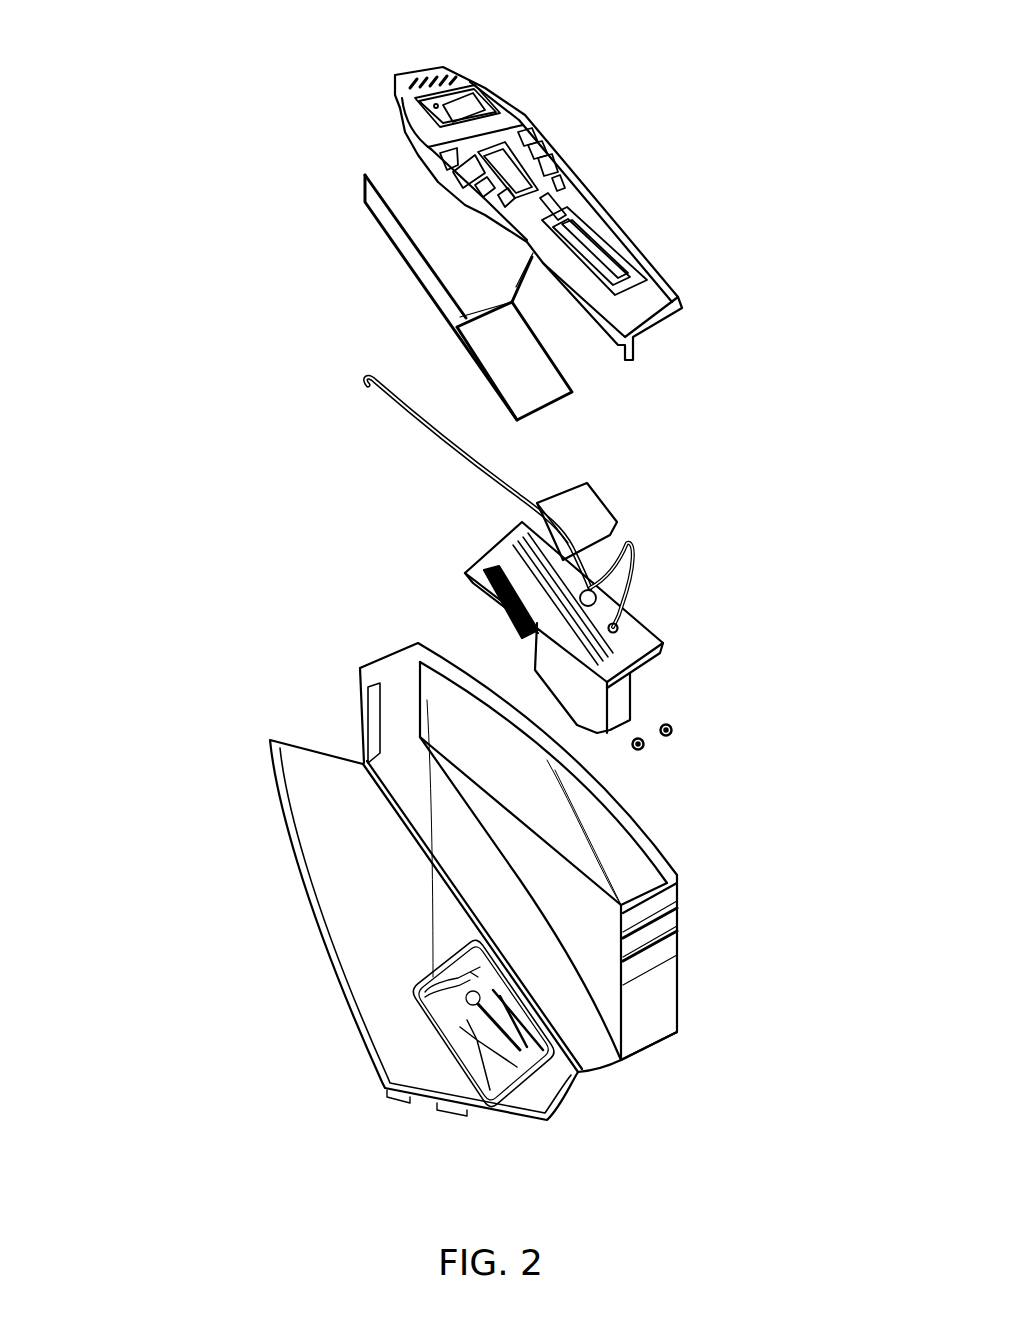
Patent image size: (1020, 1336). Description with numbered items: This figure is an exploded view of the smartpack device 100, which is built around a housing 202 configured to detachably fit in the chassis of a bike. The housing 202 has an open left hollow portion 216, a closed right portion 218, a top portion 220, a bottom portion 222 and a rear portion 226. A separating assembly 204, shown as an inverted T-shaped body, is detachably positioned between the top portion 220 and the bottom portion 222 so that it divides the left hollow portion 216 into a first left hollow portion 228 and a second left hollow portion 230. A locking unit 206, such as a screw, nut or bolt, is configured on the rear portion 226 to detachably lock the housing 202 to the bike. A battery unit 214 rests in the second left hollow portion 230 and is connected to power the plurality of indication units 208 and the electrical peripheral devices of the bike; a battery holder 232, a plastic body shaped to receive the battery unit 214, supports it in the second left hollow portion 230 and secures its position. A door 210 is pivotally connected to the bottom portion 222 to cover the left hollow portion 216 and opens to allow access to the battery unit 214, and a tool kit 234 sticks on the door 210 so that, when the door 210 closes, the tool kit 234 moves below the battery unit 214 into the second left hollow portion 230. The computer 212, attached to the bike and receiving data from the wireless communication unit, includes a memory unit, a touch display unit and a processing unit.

The smartpack device 100 is at (198, 34).
The housing 202 is at (256, 828).
The separating assembly 204 is at (517, 285).
The locking unit 206 is at (646, 749).
The plurality of indication units 208 is at (379, 75).
The door 210 is at (380, 905).
The computer 212 is at (470, 100).
The battery unit 214 is at (613, 657).
The open left hollow portion 216 is at (431, 204).
The closed right portion 218 is at (593, 848).
The top portion 220 is at (553, 207).
The bottom portion 222 is at (585, 1042).
The rear portion 226 is at (658, 1015).
The first left hollow portion 228 is at (517, 285).
The second left hollow portion 230 is at (532, 368).
The battery holder 232 is at (487, 610).
The tool kit 234 is at (462, 1037).